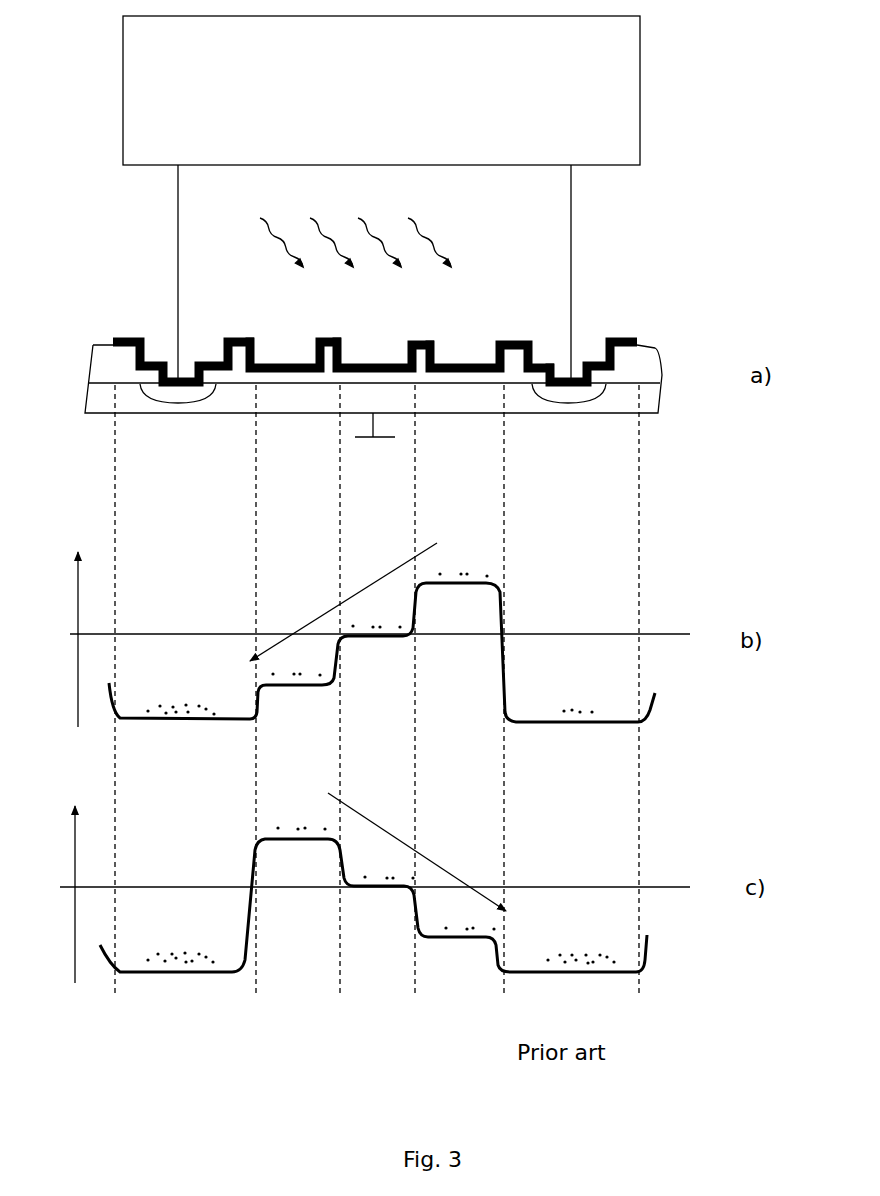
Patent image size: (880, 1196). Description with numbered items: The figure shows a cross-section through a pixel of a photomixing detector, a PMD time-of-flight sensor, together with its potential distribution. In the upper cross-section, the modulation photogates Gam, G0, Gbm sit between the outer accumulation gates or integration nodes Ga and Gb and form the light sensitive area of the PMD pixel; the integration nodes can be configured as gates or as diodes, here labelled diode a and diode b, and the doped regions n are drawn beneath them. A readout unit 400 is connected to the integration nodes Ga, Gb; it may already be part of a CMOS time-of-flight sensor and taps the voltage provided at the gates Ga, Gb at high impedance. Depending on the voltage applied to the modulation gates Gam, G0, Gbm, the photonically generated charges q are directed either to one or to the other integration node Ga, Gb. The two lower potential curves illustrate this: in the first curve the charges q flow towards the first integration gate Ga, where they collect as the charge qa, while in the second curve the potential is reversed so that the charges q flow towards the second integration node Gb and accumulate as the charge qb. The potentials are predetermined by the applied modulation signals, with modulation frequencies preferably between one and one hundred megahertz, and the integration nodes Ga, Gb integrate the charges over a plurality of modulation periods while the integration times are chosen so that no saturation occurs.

The readout unit 400 is at (381, 90).
The first integration gate Ga is at (139, 273).
The modulation photogate Gam is at (292, 355).
The modulation photogate G0 is at (382, 355).
The modulation photogate Gbm is at (472, 355).
The second integration node Gb is at (638, 273).
The n-doped region n is at (373, 393).
The charge under gate a qa is at (180, 814).
The photonically generated charges q is at (383, 751).
The charge under gate b qb is at (581, 818).